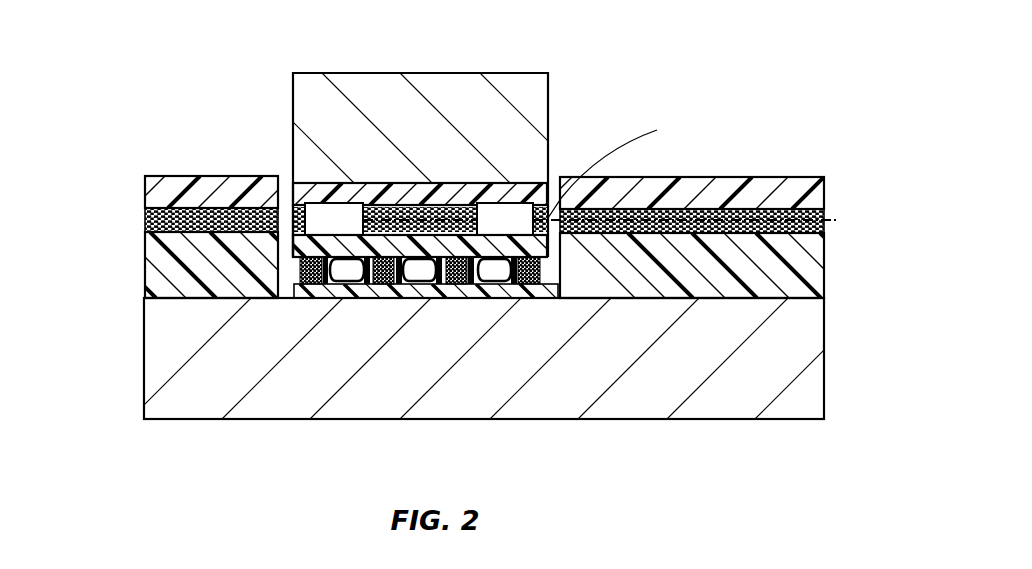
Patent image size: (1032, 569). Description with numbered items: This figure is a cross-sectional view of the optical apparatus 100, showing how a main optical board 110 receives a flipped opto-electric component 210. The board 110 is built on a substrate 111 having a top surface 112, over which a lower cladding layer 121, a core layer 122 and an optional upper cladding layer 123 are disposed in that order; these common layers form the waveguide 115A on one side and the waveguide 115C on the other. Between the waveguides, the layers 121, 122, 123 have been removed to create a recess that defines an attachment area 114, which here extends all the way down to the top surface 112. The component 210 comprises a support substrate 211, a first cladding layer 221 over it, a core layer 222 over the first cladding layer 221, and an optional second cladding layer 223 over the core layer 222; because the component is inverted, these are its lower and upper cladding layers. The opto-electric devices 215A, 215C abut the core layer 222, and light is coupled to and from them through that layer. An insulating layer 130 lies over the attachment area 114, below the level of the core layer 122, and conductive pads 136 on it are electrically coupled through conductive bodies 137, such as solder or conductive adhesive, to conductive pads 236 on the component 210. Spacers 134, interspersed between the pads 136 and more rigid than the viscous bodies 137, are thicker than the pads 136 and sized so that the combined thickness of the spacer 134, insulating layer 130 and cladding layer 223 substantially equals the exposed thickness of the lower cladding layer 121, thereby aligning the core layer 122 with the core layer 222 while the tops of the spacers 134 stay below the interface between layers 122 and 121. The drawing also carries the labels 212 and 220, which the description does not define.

The device assembly 100 is at (163, 94).
The main optical board 110 is at (145, 176).
The substrate 111 is at (144, 372).
The top surface 112 is at (145, 297).
The attachment area 114 is at (487, 312).
The waveguide 115A is at (136, 209).
The waveguide 115C is at (836, 209).
The lower cladding layer 121 is at (145, 257).
The core layer 122 is at (145, 231).
The upper cladding layer 123 is at (145, 188).
The insulating layer 130 is at (388, 297).
The spacer 134 is at (362, 296).
The conductive pad 136 is at (425, 296).
The conductive body 137 is at (486, 274).
The opto-electric component 210 is at (293, 73).
The support substrate 211 is at (440, 147).
The chip lower surface 212 is at (510, 181).
The opto-electric device 215A is at (312, 230).
The opto-electric device 215C is at (484, 230).
The first metallization layer 220 is at (546, 183).
The first cladding layer 221 is at (549, 235).
The core layer 222 is at (297, 210).
The second cladding layer 223 is at (297, 254).
The conductive pad 236 is at (505, 266).